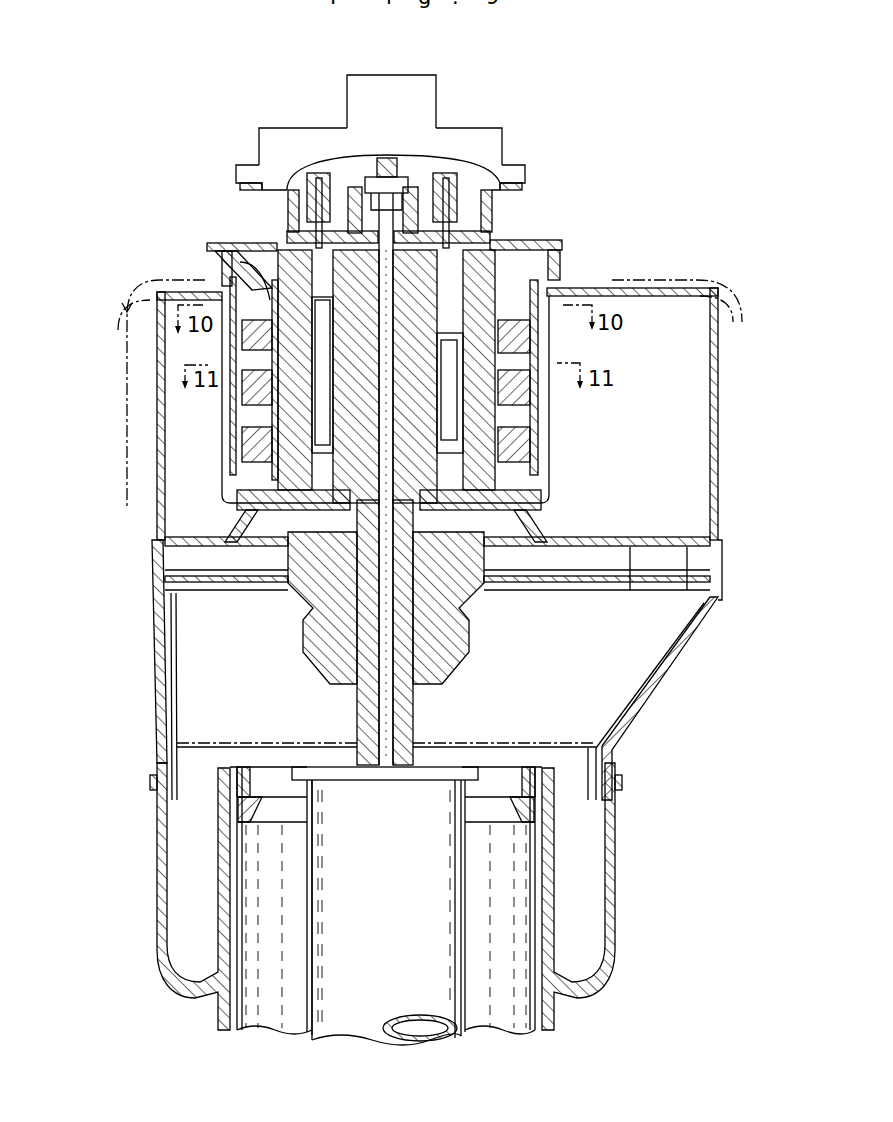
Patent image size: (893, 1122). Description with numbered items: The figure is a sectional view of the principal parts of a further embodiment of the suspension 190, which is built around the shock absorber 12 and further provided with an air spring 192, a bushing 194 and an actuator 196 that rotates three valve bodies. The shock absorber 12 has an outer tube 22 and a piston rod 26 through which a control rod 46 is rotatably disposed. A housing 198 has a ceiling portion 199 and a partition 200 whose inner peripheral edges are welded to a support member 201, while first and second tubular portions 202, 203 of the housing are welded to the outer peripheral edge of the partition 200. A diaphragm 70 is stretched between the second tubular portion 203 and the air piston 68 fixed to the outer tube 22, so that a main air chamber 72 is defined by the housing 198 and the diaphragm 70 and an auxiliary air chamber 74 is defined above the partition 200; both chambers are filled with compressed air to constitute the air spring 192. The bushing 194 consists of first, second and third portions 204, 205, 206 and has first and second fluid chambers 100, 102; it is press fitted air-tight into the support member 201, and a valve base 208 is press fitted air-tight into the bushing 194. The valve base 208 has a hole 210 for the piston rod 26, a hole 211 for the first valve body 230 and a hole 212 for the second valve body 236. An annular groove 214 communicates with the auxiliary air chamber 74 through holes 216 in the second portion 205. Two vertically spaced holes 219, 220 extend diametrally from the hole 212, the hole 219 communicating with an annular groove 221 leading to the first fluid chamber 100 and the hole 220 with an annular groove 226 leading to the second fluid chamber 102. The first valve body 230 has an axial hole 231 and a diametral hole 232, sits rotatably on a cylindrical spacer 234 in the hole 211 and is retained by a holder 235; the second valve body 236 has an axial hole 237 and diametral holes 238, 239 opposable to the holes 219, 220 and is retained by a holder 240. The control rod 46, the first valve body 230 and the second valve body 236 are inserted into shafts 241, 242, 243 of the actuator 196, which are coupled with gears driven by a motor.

The shock absorber 12 is at (298, 995).
The outer tube 22 is at (460, 998).
The piston rod 26 is at (366, 712).
The control rod 46 is at (386, 735).
The air piston 68 is at (548, 1000).
The diaphragm 70 is at (160, 905).
The main air chamber 72 is at (607, 682).
The auxiliary air chamber 74 is at (677, 427).
The first fluid chamber 100 is at (520, 288).
The second fluid chamber 102 is at (513, 412).
The suspension 190 is at (173, 238).
The air spring 192 is at (148, 530).
The bushing 194 is at (210, 262).
The actuator 196 is at (420, 92).
The housing 198 is at (237, 452).
The ceiling portion 199 is at (697, 288).
The partition 200 is at (647, 550).
The support member 201 is at (252, 408).
The first tubular portion 202 is at (718, 388).
The second tubular portion 203 is at (688, 643).
The first portion 204 is at (228, 253).
The second portion 205 is at (230, 345).
The third portion 206 is at (222, 478).
The valve base 208 is at (238, 578).
The hole 210 is at (290, 532).
The hole 211 is at (520, 468).
The hole 212 is at (240, 383).
The annular groove 214 is at (485, 358).
The holes 216 is at (525, 357).
The hole 219 is at (283, 257).
The hole 220 is at (248, 495).
The annular groove 221 is at (235, 263).
The annular groove 226 is at (502, 452).
The first valve body 230 is at (553, 262).
The hole 231 is at (470, 500).
The hole 232 is at (550, 337).
The cylindrical spacer 234 is at (495, 515).
The holder 235 is at (483, 228).
The second valve body 236 is at (348, 222).
The hole 237 is at (255, 545).
The hole 238 is at (290, 222).
The hole 239 is at (247, 512).
The holder 240 is at (326, 222).
The shaft 241 is at (387, 157).
The shaft 242 is at (448, 163).
The shaft 243 is at (350, 190).